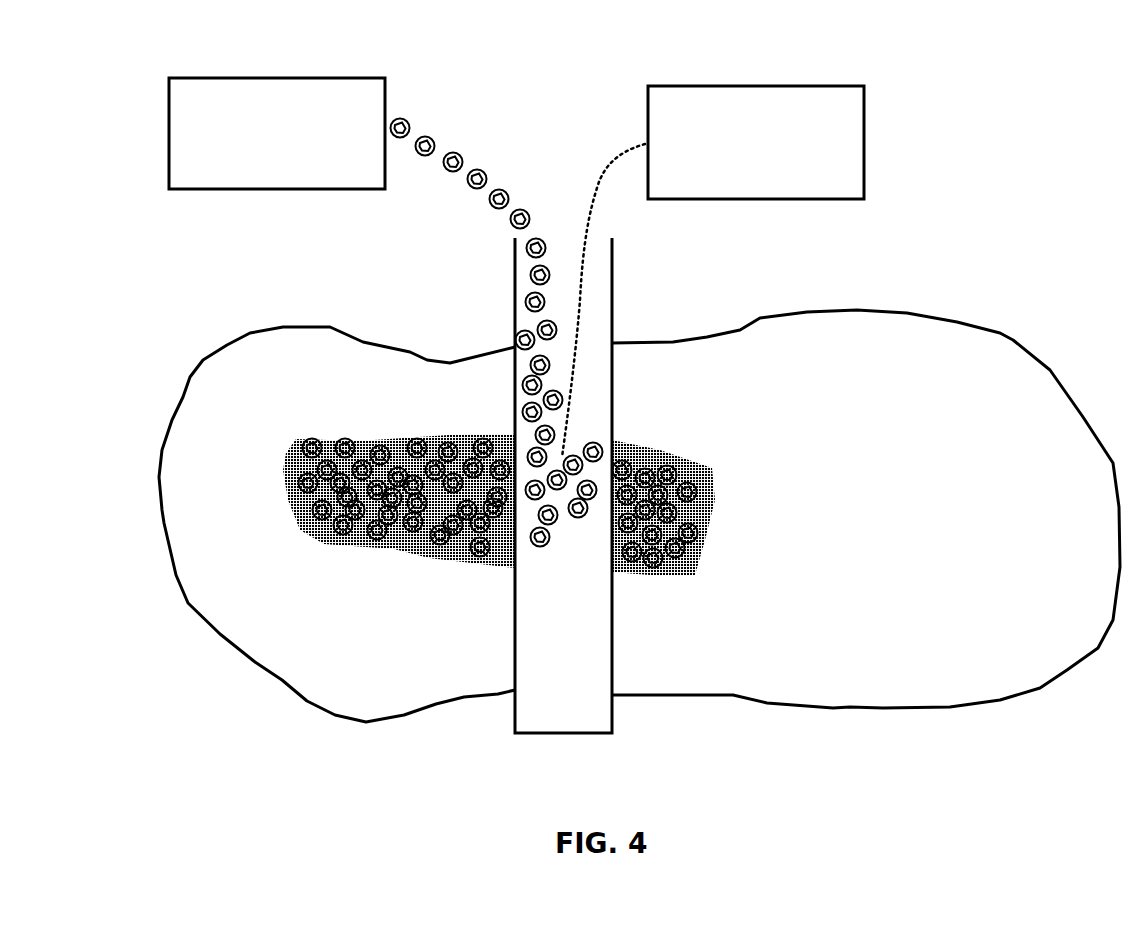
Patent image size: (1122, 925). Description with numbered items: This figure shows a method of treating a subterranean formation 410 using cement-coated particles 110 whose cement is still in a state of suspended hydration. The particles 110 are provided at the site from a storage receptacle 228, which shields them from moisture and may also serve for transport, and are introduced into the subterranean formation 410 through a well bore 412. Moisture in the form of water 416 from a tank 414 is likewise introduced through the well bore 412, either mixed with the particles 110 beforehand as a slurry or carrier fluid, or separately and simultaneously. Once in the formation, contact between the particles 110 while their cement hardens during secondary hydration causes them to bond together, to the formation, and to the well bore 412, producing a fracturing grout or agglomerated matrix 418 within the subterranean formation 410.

The storage receptacle 228 is at (228, 77).
The particle 110 is at (435, 152).
The tank 414 is at (865, 125).
The water 416 is at (602, 182).
The well bore 412 is at (612, 318).
The subterranean formation 410 is at (930, 317).
The agglomerated matrix 418 is at (394, 551).